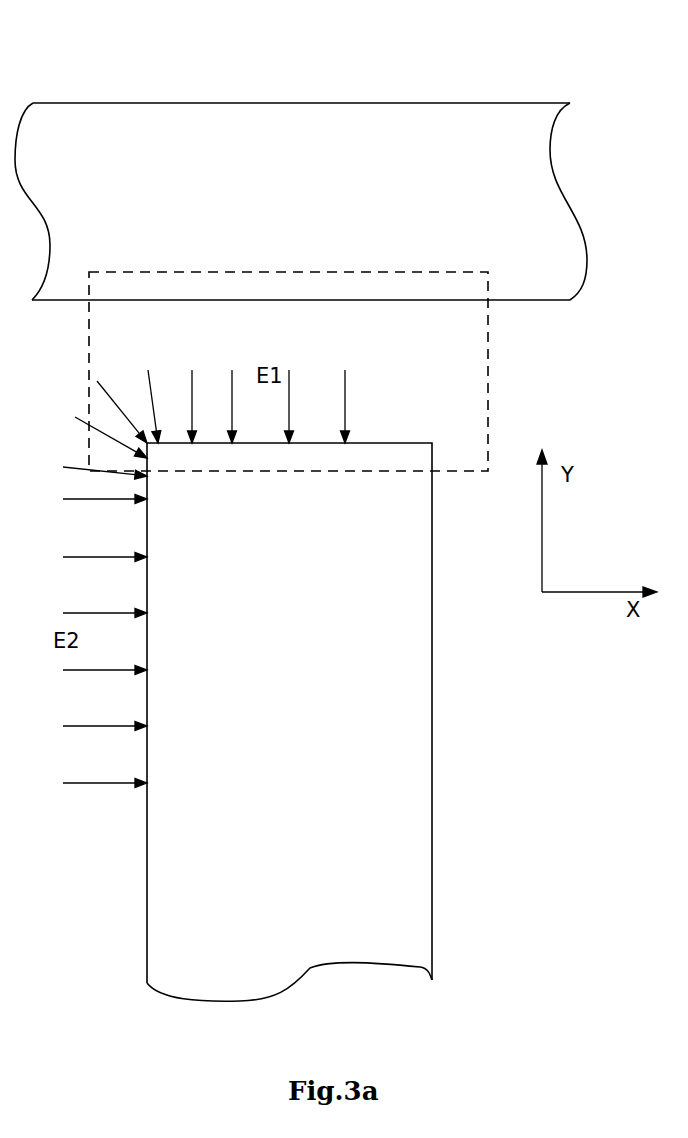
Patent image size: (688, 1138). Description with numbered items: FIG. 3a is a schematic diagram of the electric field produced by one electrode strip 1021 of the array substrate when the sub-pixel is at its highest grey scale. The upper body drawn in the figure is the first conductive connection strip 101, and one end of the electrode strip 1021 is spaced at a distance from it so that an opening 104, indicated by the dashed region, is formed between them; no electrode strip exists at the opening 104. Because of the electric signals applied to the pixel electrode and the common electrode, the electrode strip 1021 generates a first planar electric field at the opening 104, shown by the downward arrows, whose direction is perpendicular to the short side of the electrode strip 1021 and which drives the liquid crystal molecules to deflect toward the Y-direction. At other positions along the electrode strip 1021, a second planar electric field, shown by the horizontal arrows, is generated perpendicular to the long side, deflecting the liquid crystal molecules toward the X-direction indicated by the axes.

The first conductive connection strip 101 is at (308, 103).
The opening 104 is at (492, 428).
The electrode strip 1021 is at (432, 725).